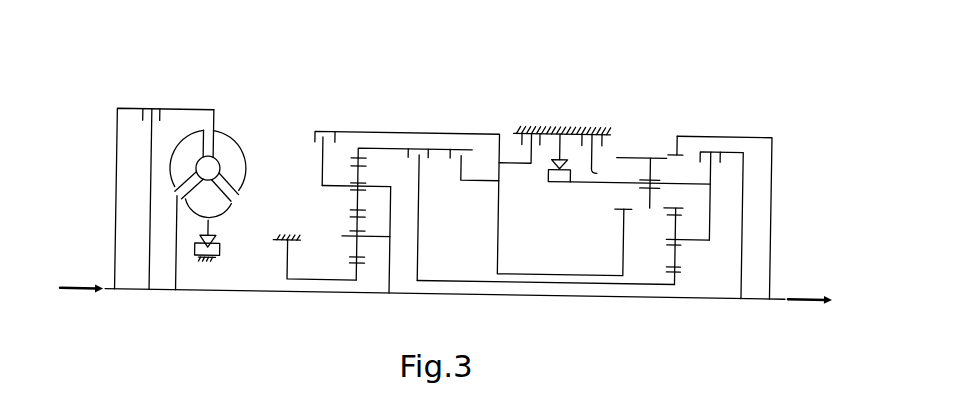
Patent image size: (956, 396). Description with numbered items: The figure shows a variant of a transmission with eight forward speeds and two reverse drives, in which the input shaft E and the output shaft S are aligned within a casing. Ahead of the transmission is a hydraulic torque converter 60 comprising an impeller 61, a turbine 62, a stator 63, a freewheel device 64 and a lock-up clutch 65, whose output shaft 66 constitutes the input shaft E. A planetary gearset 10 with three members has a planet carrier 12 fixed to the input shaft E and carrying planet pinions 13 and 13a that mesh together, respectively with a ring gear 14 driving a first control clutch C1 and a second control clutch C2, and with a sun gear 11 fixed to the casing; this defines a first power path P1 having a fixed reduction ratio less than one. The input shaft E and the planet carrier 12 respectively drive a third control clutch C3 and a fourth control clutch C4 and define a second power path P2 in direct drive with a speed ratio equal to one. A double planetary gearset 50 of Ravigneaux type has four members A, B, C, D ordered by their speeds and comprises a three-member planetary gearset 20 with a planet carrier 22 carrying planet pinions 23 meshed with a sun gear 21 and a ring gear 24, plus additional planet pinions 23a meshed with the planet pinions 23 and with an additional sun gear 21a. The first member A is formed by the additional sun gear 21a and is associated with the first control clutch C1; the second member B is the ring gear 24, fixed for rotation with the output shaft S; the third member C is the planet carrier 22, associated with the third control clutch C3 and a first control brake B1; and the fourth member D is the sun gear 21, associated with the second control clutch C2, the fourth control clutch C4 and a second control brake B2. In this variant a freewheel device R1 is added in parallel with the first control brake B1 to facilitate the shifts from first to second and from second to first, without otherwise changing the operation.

The planetary gearset 10 is at (366, 138).
The sun gear 11 is at (352, 274).
The planet carrier 12 is at (391, 221).
The planet pinion 13 is at (350, 184).
The planet pinion 13a is at (350, 224).
The ring gear 14 is at (350, 159).
The three-member planetary gearset 20 is at (646, 126).
The sun gear 21 is at (619, 257).
The additional sun gear 21a is at (675, 282).
The planet carrier 22 is at (666, 234).
The planet pinion 23 is at (619, 154).
The additional planet pinion 23a is at (674, 224).
The ring gear 24 is at (667, 132).
The double planetary gearset 50 is at (619, 50).
The hydraulic torque converter 60 is at (180, 112).
The impeller 61 is at (233, 146).
The turbine 62 is at (176, 171).
The stator 63 is at (221, 216).
The freewheel device 64 is at (220, 249).
The lock-up clutch 65 is at (144, 112).
The output shaft 66 is at (160, 296).
The first control clutch C1 is at (410, 167).
The second control clutch C2 is at (467, 167).
The third control clutch C3 is at (720, 225).
The fourth control clutch C4 is at (309, 161).
The first control brake B1 is at (591, 136).
The second control brake B2 is at (555, 132).
The freewheel device R1 is at (561, 170).
The first power path P1 is at (466, 187).
The second power path P2 is at (434, 122).
The first member A is at (608, 283).
The second member B is at (739, 130).
The third member C is at (598, 175).
The fourth member D is at (529, 269).
The input shaft E is at (247, 295).
The output shaft S is at (790, 297).